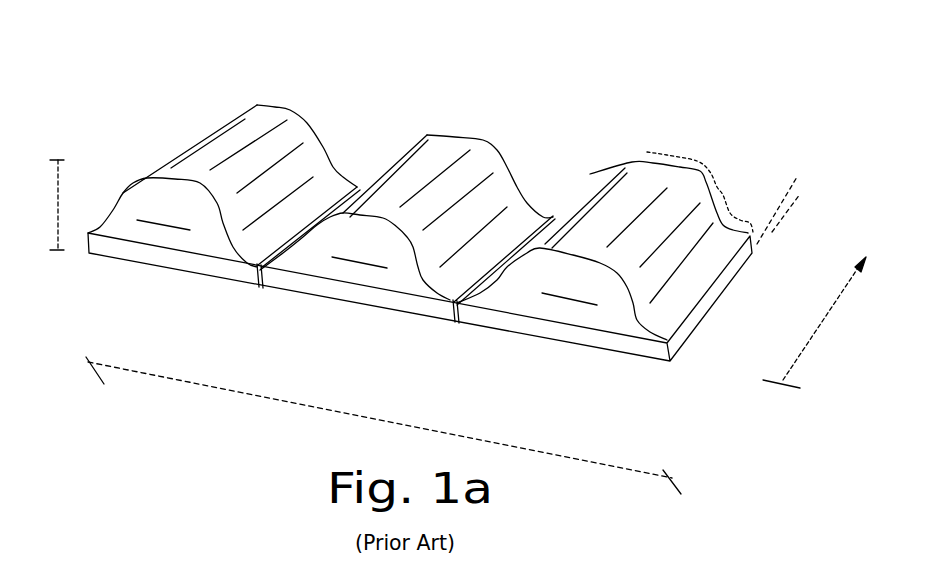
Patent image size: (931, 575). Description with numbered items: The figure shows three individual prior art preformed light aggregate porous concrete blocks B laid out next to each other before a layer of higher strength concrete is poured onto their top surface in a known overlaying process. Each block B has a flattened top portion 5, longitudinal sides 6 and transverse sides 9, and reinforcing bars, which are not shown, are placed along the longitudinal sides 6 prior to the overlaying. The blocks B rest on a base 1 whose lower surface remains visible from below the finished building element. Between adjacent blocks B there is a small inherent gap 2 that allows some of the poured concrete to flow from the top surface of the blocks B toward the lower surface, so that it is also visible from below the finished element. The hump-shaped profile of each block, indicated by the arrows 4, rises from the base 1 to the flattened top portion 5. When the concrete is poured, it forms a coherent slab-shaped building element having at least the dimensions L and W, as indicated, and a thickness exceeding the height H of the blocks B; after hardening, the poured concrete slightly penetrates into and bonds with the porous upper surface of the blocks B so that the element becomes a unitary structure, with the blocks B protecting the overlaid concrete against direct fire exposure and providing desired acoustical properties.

The base 1 is at (167, 270).
The gap 2 is at (260, 292).
The elevation / hump 4 is at (277, 106).
The flattened top portion 5 is at (626, 221).
The longitudinal side 6 is at (699, 249).
The transverse side 9 is at (581, 289).
The preformed light aggregate porous concrete block B is at (192, 140).
The height of the blocks H is at (48, 205).
The width dimension W is at (383, 425).
The length dimension L is at (814, 322).